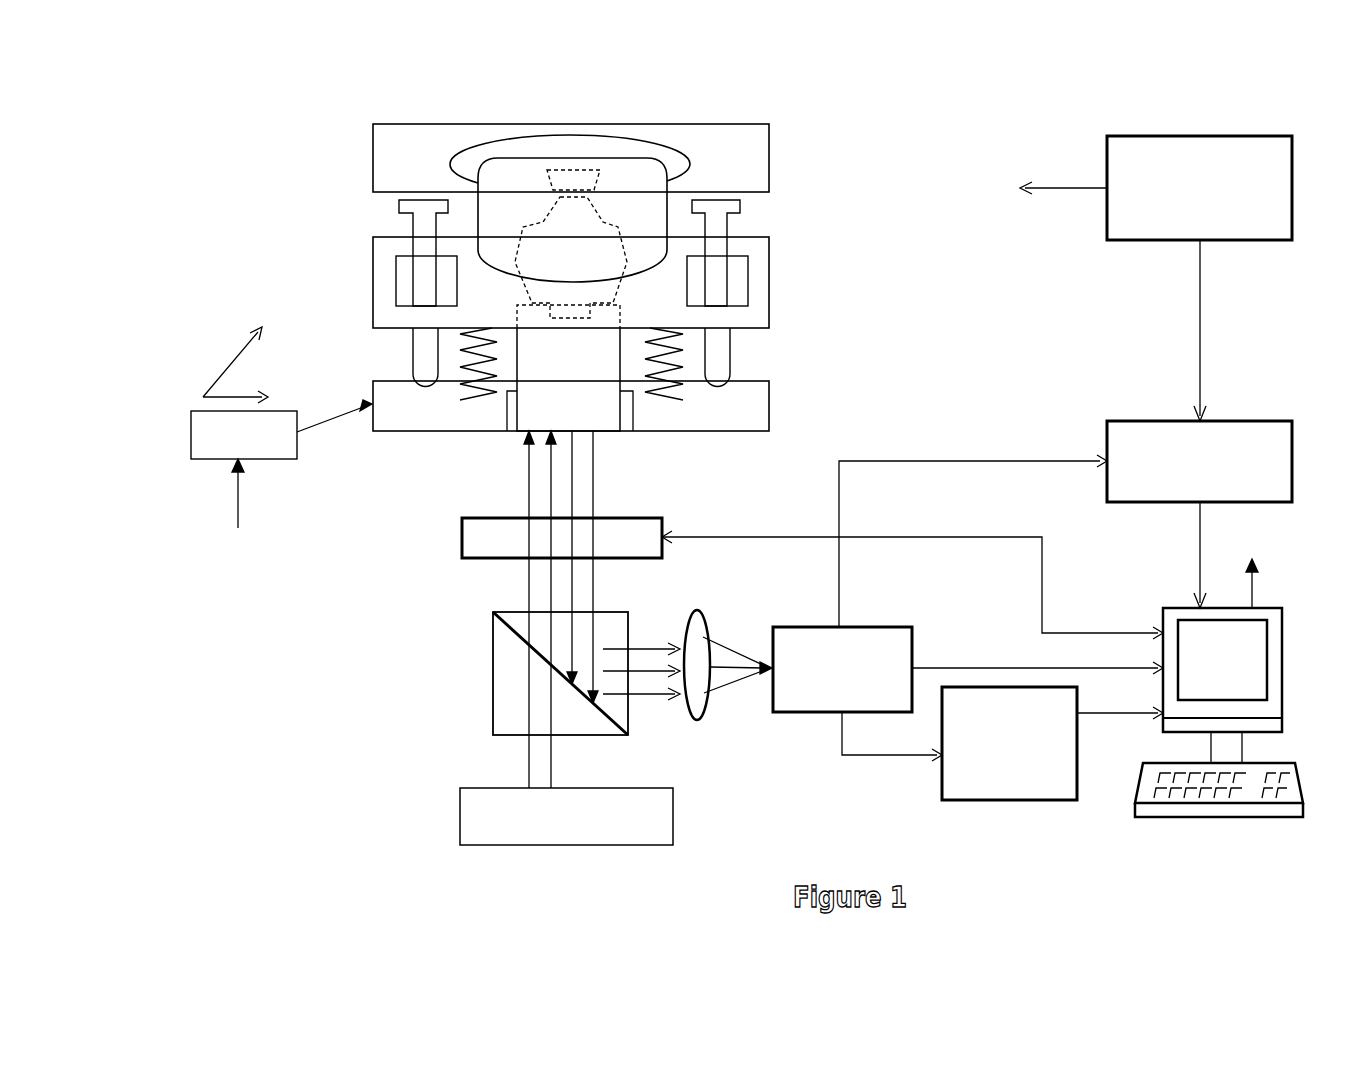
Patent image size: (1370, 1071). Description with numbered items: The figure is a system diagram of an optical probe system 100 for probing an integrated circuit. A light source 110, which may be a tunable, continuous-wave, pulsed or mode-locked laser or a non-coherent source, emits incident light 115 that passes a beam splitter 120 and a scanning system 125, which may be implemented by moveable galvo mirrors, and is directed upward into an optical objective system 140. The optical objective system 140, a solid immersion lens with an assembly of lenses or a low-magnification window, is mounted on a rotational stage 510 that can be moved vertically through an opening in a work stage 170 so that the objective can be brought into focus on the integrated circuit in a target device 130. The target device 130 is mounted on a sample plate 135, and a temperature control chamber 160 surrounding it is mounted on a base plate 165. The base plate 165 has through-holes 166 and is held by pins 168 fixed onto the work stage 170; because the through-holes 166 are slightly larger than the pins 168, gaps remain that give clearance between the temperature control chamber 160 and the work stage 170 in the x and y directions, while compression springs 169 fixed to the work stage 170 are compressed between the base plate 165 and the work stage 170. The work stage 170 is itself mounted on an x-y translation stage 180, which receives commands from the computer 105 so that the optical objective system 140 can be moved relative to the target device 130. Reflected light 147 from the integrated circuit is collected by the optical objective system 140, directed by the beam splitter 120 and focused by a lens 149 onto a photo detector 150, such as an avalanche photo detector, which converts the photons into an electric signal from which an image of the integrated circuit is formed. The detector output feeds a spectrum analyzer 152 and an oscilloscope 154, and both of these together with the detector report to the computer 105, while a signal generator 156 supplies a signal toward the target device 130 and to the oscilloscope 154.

The optical probe system 100 is at (1115, 106).
The computer 105 is at (1256, 657).
The light source 110 is at (566, 816).
The incident light 115 is at (528, 594).
The beam splitter 120 is at (494, 686).
The scanning system 125 is at (812, 578).
The target device 130 is at (563, 171).
The sample plate 135 is at (747, 155).
The optical objective system 140 is at (571, 257).
The reflected light 147 is at (595, 480).
The lens 149 is at (704, 637).
The photo detector 150 is at (968, 608).
The spectrum analyzer 152 is at (1052, 743).
The oscilloscope 154 is at (1199, 514).
The signal generator 156 is at (1111, 278).
The temperature control chamber 160 is at (633, 174).
The base plate 165 is at (757, 263).
The through-holes 166 is at (410, 273).
The pins 168 is at (428, 351).
The compression springs 169 is at (461, 387).
The work stage 170 is at (753, 407).
The x-y translation stage 180 is at (279, 447).
The rotational stage 510 is at (570, 368).